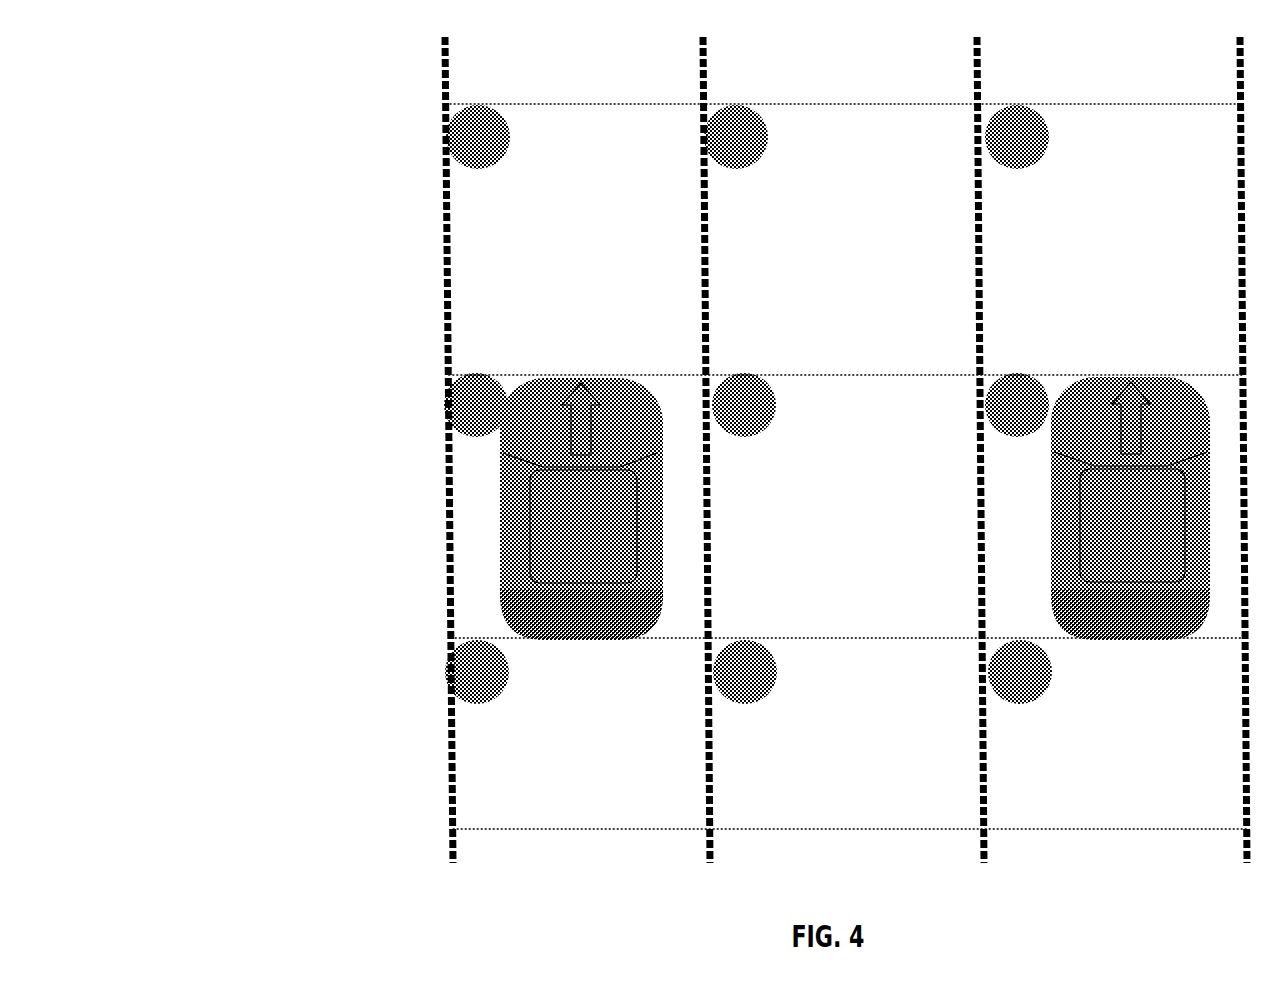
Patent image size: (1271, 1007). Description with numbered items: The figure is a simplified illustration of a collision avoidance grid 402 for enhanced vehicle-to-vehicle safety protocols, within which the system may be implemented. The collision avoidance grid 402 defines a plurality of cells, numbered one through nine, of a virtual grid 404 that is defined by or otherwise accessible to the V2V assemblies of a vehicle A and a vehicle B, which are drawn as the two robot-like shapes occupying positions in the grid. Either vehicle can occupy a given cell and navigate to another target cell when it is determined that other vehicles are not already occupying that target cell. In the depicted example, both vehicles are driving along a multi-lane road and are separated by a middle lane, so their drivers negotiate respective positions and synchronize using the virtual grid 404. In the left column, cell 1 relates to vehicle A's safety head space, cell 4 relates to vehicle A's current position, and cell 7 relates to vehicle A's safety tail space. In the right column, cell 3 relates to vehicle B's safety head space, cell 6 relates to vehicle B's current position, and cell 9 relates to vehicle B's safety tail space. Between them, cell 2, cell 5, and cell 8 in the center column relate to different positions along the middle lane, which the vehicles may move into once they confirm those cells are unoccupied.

The collision avoidance grid 402 is at (233, 59).
The virtual grid 404 is at (336, 411).
The cell 1 is at (478, 137).
The cell 2 is at (736, 137).
The cell 3 is at (1017, 137).
The cell 4 is at (476, 405).
The cell 5 is at (744, 405).
The cell 6 is at (1017, 405).
The cell 7 is at (477, 672).
The cell 8 is at (745, 672).
The cell 9 is at (1020, 672).